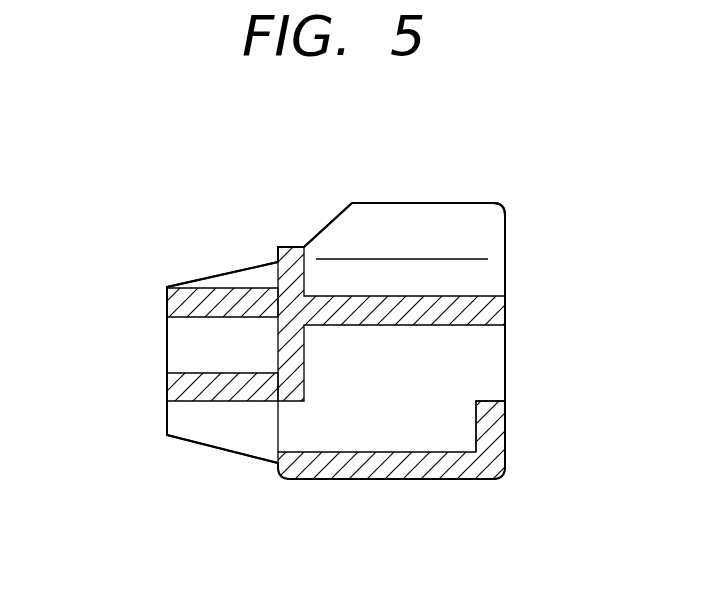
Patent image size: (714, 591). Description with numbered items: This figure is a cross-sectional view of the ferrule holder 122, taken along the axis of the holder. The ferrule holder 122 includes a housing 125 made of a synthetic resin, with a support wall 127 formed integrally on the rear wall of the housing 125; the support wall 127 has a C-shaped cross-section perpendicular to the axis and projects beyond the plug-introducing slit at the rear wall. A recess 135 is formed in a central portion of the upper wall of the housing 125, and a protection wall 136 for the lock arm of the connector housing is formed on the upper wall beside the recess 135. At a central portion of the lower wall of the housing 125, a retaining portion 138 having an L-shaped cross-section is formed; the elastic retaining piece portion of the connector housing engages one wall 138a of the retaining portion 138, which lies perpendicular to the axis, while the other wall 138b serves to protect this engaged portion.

The ferrule holder 122 is at (368, 192).
The housing 125 is at (520, 235).
The support wall 127 is at (177, 353).
The recess 135 is at (495, 285).
The protection wall 136 is at (487, 208).
The retaining portion 138 is at (477, 468).
The one wall of retaining portion 138a is at (508, 438).
The other wall of retaining portion 138b is at (323, 480).